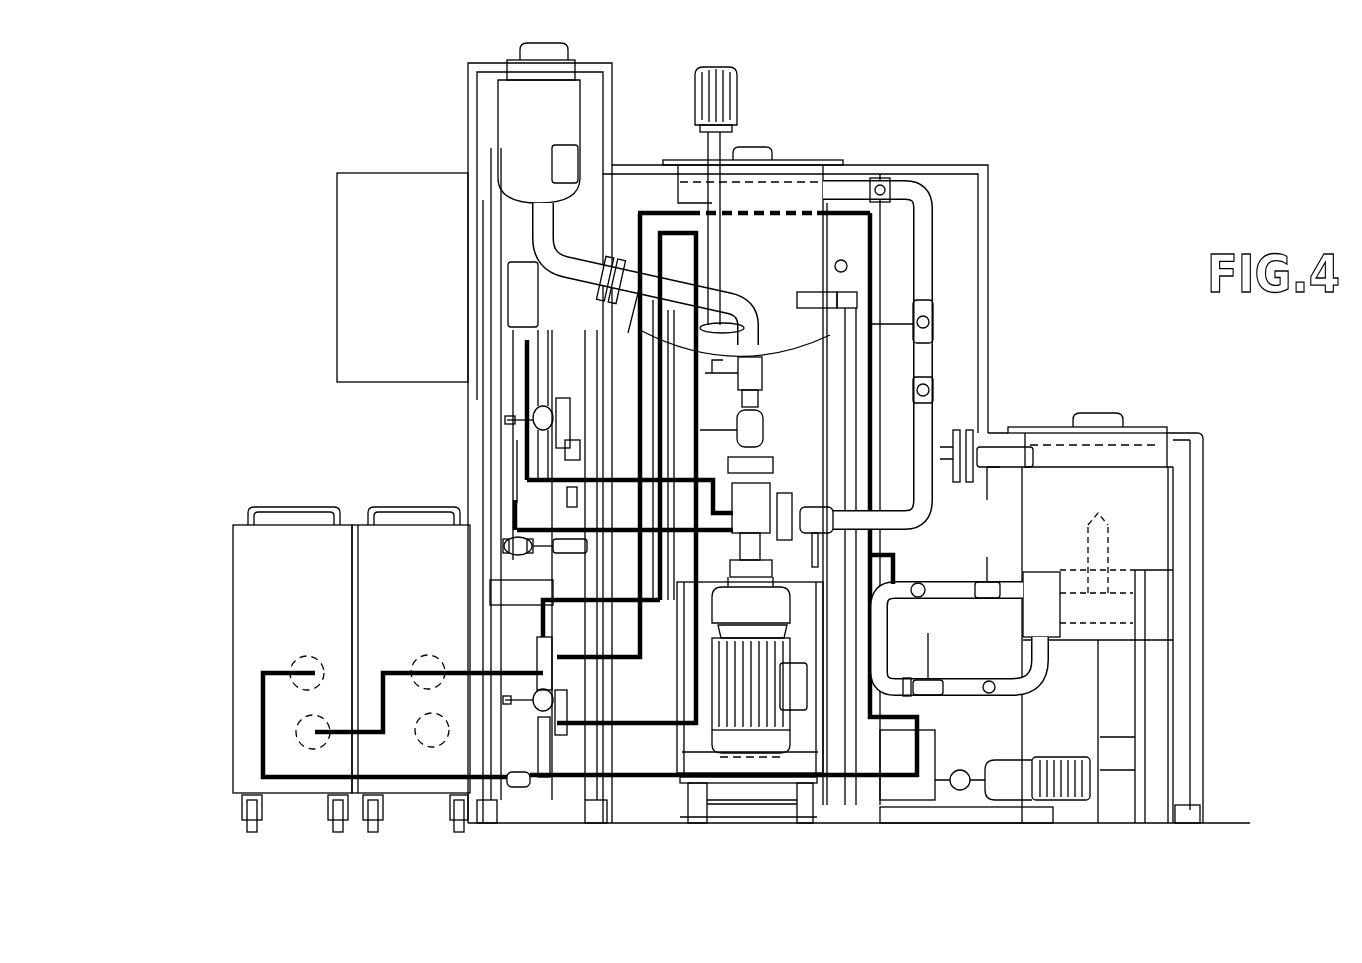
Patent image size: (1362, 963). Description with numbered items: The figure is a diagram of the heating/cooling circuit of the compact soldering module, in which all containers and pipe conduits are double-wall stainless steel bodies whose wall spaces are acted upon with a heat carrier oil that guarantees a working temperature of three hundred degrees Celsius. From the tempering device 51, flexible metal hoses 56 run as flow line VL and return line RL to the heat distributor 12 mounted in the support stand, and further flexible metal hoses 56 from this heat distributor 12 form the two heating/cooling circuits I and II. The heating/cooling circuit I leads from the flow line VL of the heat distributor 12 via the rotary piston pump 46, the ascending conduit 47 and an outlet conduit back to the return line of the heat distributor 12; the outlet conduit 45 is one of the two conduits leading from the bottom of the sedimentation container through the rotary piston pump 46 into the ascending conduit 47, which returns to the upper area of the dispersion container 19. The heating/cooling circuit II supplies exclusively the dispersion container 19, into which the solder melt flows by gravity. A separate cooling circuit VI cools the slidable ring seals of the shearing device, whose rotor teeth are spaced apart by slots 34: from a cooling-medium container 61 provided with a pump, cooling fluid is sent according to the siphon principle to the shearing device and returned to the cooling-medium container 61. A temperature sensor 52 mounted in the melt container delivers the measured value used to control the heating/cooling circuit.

The heat distributor 12 is at (523, 793).
The dispersion container 19 is at (778, 237).
The slots 34 is at (640, 378).
The outlet conduit 45 is at (892, 680).
The rotary piston pump 46 is at (910, 780).
The ascending conduit 47 is at (897, 567).
The tempering device 51 is at (247, 535).
The temperature sensor 52 is at (848, 262).
The flexible metal hoses 56 is at (455, 670).
The cooling-medium container 61 is at (522, 268).
The heating/cooling circuit I is at (873, 352).
The heating/cooling circuit II is at (700, 465).
The return line RL is at (390, 670).
The flow line VL is at (277, 670).
The cooling circuit VI is at (520, 352).